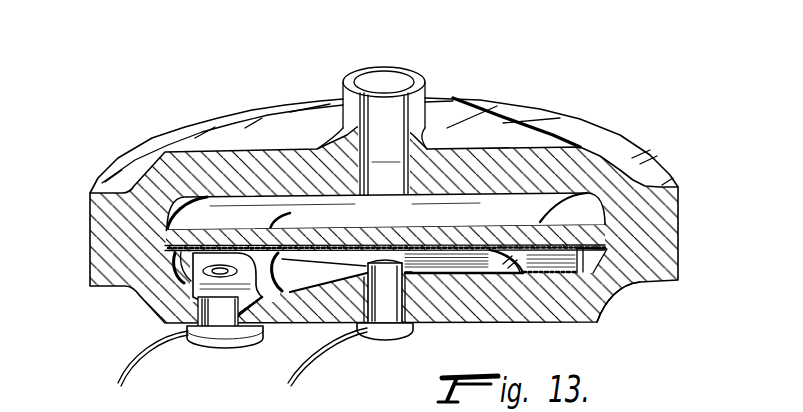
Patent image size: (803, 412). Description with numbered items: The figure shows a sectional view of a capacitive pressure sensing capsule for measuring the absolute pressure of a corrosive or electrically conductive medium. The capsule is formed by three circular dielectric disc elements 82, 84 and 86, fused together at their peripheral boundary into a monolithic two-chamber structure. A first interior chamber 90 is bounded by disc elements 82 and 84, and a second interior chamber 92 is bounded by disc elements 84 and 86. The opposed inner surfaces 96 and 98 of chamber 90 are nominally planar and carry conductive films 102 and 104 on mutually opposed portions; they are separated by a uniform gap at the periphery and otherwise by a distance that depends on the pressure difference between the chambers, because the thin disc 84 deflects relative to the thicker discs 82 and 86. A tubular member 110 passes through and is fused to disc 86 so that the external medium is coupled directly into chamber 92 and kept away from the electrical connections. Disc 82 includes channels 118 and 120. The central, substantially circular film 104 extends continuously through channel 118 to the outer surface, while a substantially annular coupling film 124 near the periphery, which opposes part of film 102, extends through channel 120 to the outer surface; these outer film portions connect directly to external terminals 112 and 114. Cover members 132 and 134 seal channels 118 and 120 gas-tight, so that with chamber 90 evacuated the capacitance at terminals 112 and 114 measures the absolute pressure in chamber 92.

The dielectric disc element 82 is at (183, 303).
The dielectric disc element 84 is at (180, 243).
The dielectric disc element 86 is at (176, 178).
The first interior chamber 90 is at (600, 200).
The second interior chamber 92 is at (583, 212).
The inner surface 96 is at (165, 265).
The inner surface 98 is at (640, 282).
The conductive film 102 is at (275, 233).
The conductive film 104 is at (458, 275).
The tubular member 110 is at (377, 117).
The external terminal 112 is at (290, 382).
The external terminal 114 is at (115, 374).
The channel 118 is at (383, 263).
The channel 120 is at (217, 268).
The coupling film 124 is at (515, 240).
The cover member 132 is at (393, 340).
The cover member 134 is at (217, 347).